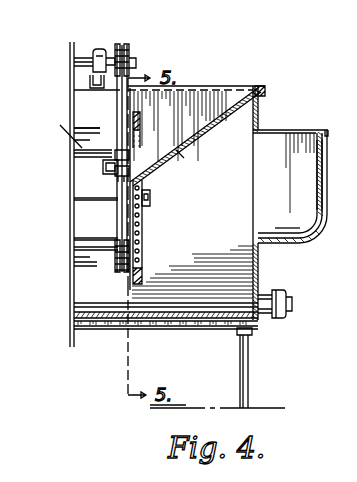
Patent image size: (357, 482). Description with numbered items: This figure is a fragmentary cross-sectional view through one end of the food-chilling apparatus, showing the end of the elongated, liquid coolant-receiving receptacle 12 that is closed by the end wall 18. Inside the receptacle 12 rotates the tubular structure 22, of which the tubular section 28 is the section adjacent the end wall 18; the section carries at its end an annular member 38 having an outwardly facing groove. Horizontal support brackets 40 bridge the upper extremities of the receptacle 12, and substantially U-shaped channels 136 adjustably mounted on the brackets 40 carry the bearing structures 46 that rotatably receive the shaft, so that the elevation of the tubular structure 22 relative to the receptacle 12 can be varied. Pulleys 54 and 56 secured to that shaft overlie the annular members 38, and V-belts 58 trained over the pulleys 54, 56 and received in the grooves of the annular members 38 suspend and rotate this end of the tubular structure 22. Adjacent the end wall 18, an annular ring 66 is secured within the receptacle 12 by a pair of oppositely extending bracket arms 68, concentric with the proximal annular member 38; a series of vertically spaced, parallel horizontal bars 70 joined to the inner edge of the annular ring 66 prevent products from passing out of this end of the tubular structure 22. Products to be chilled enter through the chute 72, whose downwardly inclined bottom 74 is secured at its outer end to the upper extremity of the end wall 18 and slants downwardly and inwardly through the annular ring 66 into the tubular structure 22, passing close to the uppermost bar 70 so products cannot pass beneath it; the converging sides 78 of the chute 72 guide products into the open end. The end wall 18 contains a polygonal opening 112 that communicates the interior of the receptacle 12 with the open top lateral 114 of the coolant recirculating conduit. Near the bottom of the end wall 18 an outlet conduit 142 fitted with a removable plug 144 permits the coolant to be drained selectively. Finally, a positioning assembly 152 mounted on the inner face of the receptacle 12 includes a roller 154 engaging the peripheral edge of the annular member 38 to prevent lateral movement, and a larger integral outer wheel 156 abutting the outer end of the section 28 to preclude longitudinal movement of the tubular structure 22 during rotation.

The liquid coolant-receiving receptacle 12 is at (101, 336).
The end wall 18 is at (263, 118).
The tubular structure 22 is at (66, 217).
The tubular section 28 is at (83, 121).
The annular member 38 is at (117, 270).
The support bracket 40 is at (92, 88).
The bearing structure 46 is at (100, 50).
The pulley 54 is at (15, 478).
The pulley 56 is at (128, 48).
The V-belt 58 is at (126, 96).
The annular ring 66 is at (143, 276).
The bracket arm 68 is at (151, 200).
The horizontal bar 70 is at (142, 233).
The chute 72 is at (179, 155).
The downwardly inclined bottom 74 is at (201, 133).
The converging side 78 is at (187, 100).
The polygonal opening 112 is at (252, 137).
The open top lateral 114 is at (325, 181).
The U-shaped channel 136 is at (92, 70).
The outlet conduit 142 is at (266, 318).
The removable plug 144 is at (290, 301).
The assembly 152 is at (101, 173).
The roller 154 is at (132, 152).
The outer wheel 156 is at (120, 175).